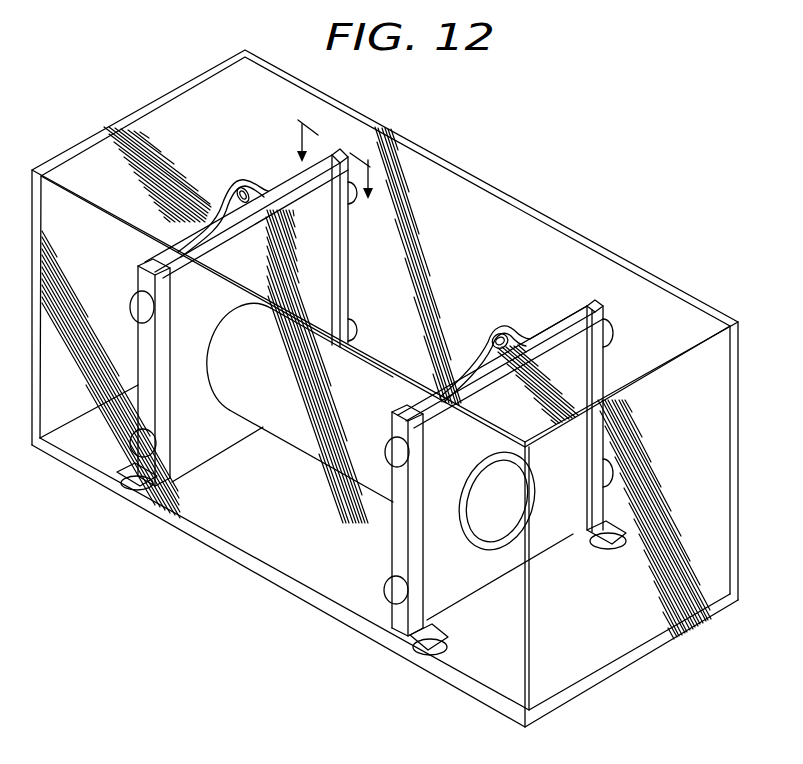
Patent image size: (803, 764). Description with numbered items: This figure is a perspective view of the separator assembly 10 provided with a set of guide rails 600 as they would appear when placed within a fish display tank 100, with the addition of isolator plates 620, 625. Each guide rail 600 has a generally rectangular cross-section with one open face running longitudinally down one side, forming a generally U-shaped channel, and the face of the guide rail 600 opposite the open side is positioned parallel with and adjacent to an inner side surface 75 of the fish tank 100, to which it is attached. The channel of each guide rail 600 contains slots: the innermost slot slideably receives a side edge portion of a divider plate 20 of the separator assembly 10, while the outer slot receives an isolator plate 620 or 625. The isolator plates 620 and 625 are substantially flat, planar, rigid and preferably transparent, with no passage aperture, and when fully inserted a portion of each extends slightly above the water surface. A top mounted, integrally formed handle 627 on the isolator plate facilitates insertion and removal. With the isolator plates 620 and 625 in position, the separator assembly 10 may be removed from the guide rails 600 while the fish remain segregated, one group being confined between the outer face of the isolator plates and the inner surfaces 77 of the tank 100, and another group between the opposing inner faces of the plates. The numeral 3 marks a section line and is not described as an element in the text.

The fish display tank 100 is at (385, 379).
The inner side surface 75 is at (517, 218).
The inner surface 77 is at (182, 104).
The separator assembly 10 is at (375, 341).
The divider plate 20 is at (252, 306).
The isolator plate 620 is at (253, 172).
The guide rail 600 is at (526, 459).
The isolator plate 625 is at (562, 323).
The handle 627 is at (509, 333).
The section line 3- 3 is at (335, 168).